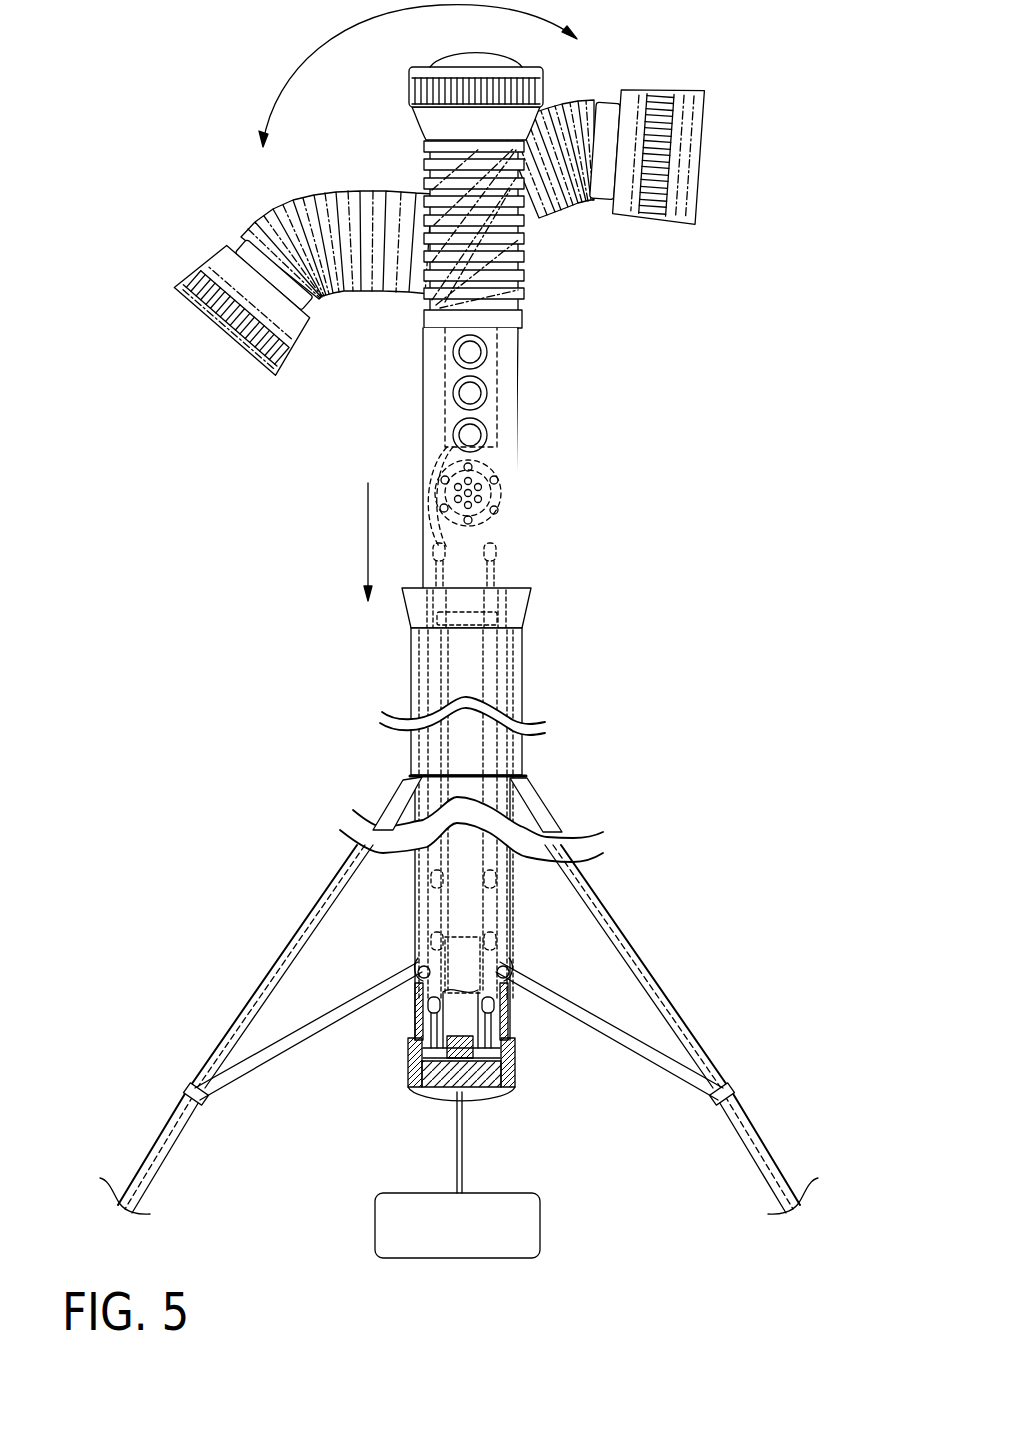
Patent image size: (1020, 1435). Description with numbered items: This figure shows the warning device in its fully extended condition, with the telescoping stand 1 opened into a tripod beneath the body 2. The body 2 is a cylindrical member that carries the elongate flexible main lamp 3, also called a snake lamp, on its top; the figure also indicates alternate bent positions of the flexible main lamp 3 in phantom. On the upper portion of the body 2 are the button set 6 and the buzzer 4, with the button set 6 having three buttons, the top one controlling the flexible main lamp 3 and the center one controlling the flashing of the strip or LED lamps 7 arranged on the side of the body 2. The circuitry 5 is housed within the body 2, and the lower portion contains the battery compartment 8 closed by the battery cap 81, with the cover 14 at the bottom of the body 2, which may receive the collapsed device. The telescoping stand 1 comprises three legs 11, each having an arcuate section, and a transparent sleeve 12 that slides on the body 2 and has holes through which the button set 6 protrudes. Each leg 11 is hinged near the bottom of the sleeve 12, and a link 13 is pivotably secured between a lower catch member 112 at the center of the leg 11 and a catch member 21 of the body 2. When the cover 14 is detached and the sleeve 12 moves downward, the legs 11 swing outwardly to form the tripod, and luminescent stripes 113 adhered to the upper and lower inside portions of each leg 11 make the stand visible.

The telescoping stand 1 is at (680, 997).
The body 2 is at (548, 392).
The main lamp 3 is at (560, 67).
The buzzer 4 is at (496, 500).
The circuitry 5 is at (498, 614).
The button set 6 is at (445, 340).
The strip or LED lamps 7 is at (498, 551).
The battery compartment 8 is at (478, 918).
The legs 11 is at (397, 797).
The sleeve 12 is at (413, 607).
The link 13 is at (247, 1070).
The cover 14 is at (533, 1222).
The catch member 21 is at (410, 967).
The battery cap 81 is at (483, 1094).
The lower catch member 112 is at (187, 1093).
The luminescent stripes 113 is at (357, 853).